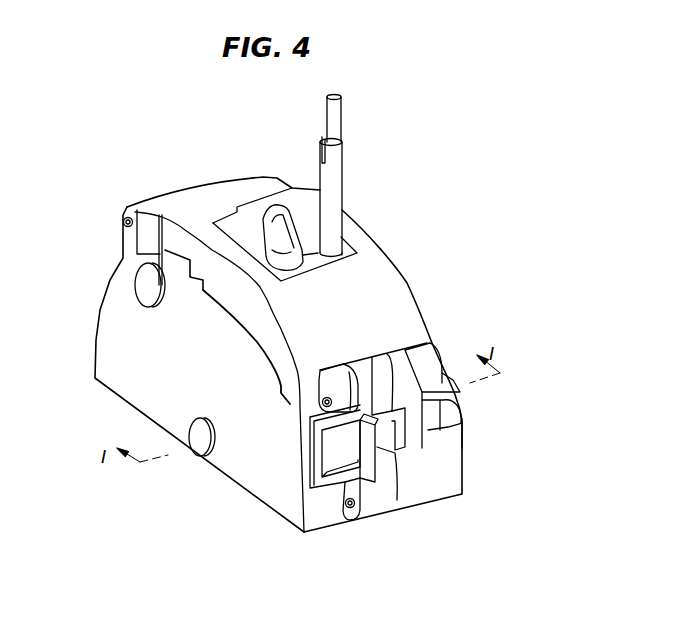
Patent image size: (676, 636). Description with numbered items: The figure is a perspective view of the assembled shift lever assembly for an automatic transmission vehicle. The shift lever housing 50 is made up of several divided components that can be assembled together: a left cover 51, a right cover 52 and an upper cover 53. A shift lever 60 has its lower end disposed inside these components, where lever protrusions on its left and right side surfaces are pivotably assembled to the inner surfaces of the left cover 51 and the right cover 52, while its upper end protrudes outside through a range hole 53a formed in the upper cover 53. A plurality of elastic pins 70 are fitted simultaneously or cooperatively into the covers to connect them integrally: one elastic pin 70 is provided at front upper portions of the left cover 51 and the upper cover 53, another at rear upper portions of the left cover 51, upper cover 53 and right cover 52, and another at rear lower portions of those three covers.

The shift lever housing 50 is at (412, 280).
The left cover 51 is at (118, 362).
The right cover 52 is at (431, 483).
The upper cover 53 is at (208, 197).
The range hole 53a is at (273, 208).
The shift lever 60 is at (337, 175).
The elastic pin 70 is at (124, 222).